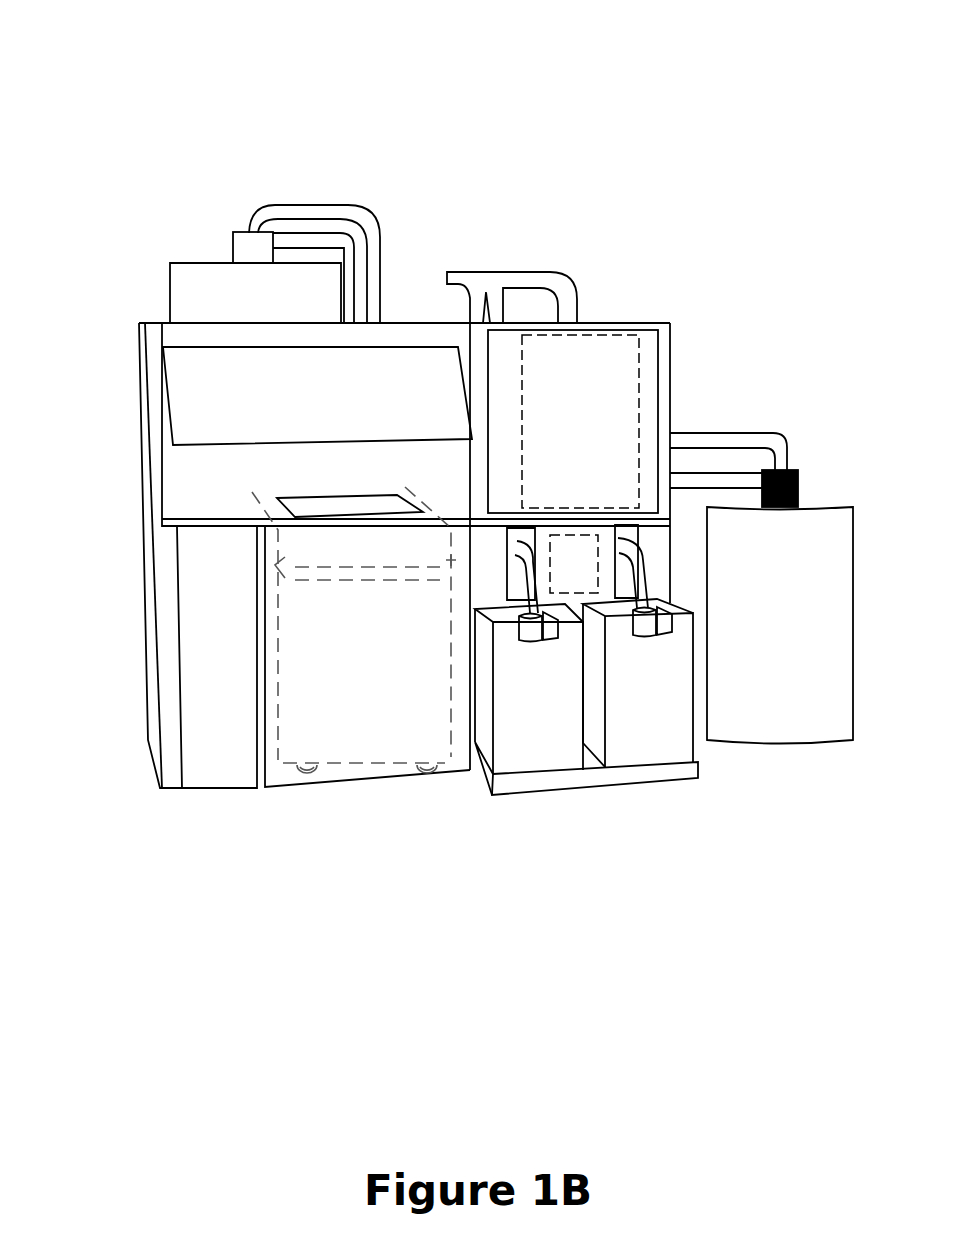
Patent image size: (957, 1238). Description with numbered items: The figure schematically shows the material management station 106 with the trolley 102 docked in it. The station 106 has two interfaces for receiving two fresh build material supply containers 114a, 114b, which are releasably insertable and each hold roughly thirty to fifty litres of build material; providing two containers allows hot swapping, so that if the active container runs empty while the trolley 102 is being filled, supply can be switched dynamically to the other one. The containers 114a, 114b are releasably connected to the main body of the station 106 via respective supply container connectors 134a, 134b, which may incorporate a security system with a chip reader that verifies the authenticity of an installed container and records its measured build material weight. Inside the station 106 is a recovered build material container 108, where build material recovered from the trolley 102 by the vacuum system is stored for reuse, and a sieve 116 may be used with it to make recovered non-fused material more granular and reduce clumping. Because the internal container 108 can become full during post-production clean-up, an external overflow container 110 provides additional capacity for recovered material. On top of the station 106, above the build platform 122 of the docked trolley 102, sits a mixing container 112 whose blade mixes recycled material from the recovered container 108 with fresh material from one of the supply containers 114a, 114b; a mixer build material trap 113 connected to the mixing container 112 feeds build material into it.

The material management station 106 is at (408, 92).
The trolley 102 is at (378, 737).
The recovered build material container 108 is at (627, 343).
The external overflow container 110 is at (820, 552).
The mixing container 112 is at (203, 275).
The mixer build material trap 113 is at (243, 240).
The fresh build material supply container 114a is at (535, 753).
The fresh build material supply container 114b is at (657, 743).
The sieve 116 is at (588, 543).
The build platform 122 is at (368, 500).
The supply container connector 134a is at (542, 642).
The supply container connector 134b is at (653, 640).